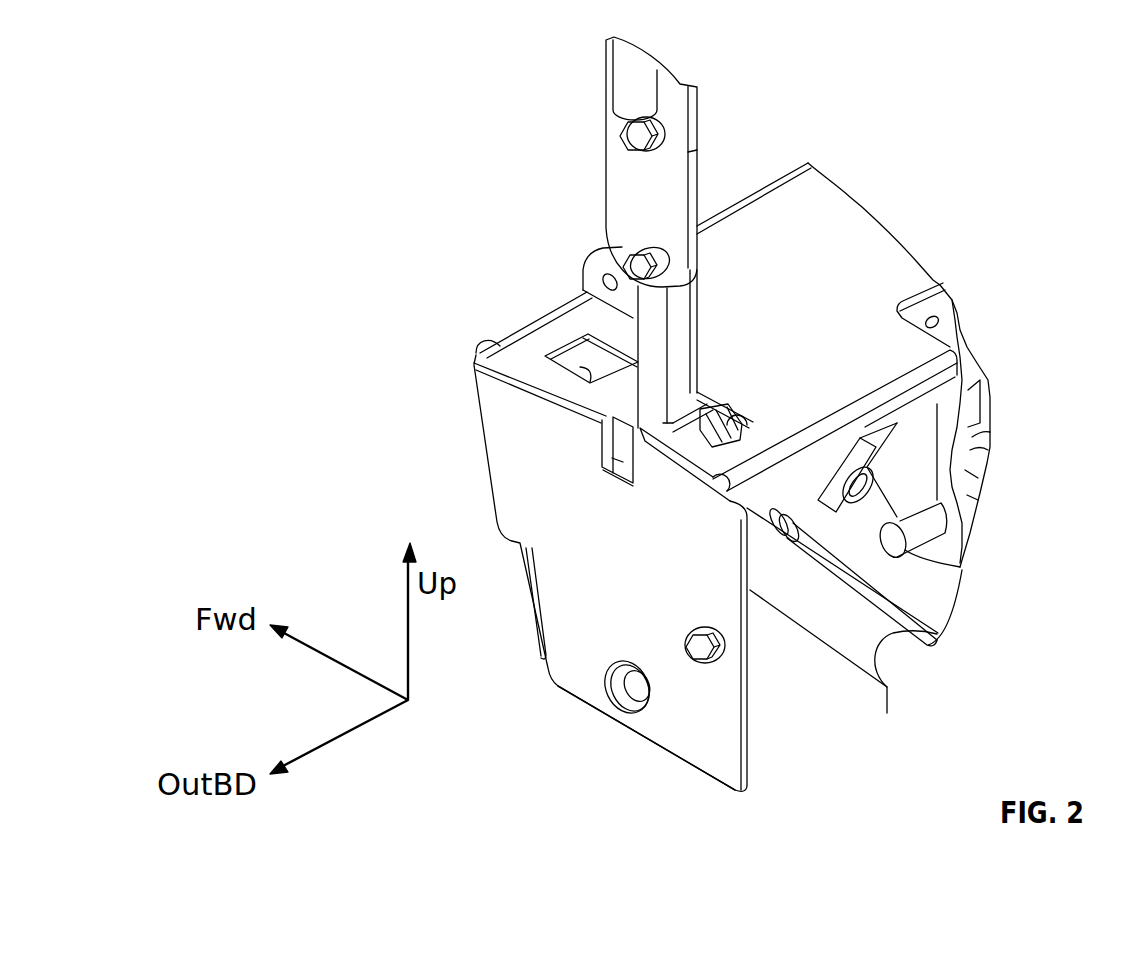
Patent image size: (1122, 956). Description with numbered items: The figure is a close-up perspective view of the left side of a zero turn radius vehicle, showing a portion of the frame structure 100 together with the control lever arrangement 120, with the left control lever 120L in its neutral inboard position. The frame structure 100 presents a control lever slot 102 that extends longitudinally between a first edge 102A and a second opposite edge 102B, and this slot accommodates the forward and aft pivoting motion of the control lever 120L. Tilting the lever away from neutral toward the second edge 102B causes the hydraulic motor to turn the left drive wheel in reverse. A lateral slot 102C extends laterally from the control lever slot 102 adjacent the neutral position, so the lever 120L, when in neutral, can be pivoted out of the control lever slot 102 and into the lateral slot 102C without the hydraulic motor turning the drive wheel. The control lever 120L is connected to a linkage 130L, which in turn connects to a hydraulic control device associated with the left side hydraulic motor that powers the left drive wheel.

The frame structure 100 is at (839, 270).
The control lever slot 102 is at (690, 519).
The first edge 102A is at (552, 345).
The second opposite edge 102B is at (745, 427).
The lateral slot 102C is at (602, 486).
The control lever arrangement 120 is at (556, 232).
The left control lever 120L is at (612, 92).
The linkage 130L is at (895, 600).